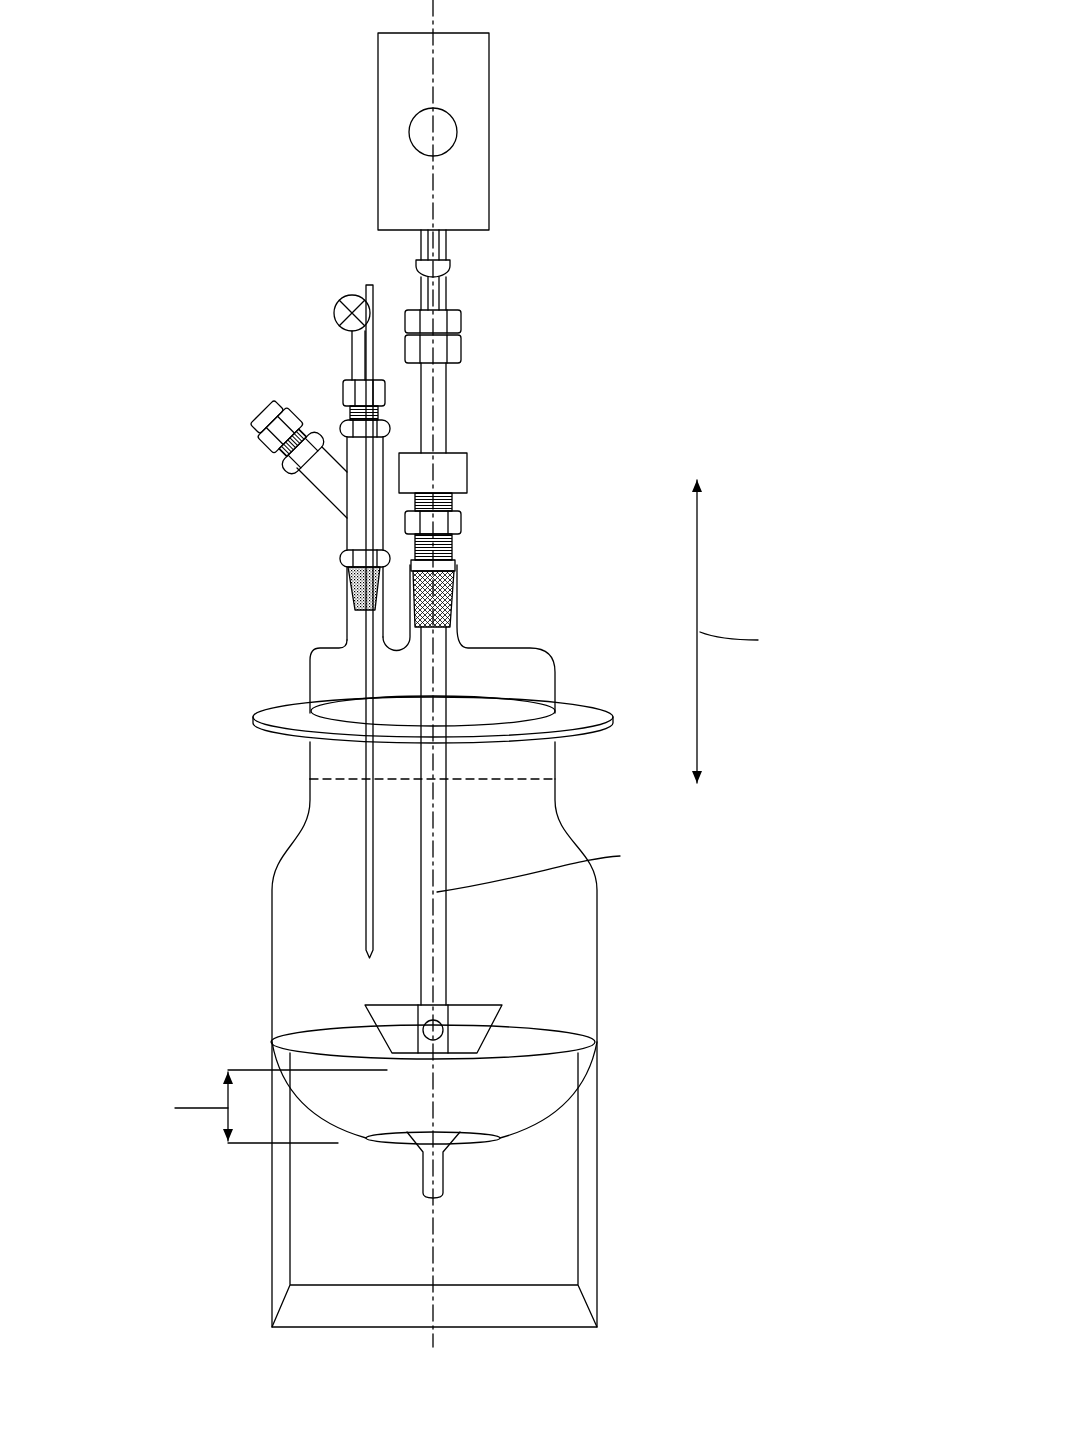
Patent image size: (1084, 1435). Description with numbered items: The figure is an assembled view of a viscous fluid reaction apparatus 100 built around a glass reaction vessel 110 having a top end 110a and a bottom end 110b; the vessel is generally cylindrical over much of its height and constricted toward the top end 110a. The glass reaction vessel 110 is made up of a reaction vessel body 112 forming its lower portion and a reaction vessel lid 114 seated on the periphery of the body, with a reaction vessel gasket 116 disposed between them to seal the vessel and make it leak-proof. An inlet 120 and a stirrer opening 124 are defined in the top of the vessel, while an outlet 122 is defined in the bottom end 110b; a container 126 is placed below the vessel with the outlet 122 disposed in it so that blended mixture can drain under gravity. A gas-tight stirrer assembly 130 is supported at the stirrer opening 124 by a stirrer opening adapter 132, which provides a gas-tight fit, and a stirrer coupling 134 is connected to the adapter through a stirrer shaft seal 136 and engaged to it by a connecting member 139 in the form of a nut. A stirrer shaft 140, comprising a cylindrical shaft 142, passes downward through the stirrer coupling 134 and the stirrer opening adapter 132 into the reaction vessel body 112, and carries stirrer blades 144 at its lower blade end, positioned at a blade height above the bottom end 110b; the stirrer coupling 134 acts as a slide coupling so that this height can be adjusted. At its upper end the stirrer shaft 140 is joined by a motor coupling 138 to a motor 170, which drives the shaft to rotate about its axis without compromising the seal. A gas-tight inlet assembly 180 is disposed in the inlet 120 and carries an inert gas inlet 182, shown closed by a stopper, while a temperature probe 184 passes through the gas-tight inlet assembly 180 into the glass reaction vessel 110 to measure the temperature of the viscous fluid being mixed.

The viscous fluid reaction apparatus 100 is at (632, 33).
The glass reaction vessel 110 is at (427, 946).
The top end 110a is at (522, 648).
The bottom end 110b is at (398, 1142).
The reaction vessel body 112 is at (270, 885).
The reaction vessel lid 114 is at (309, 676).
The reaction vessel gasket 116 is at (255, 722).
The inlet 120 is at (336, 561).
The outlet 122 is at (405, 1155).
The stirrer opening 124 is at (460, 565).
The container 126 is at (600, 1183).
The gas-tight stirrer assembly 130 is at (459, 404).
The stirrer opening adapter 132 is at (453, 597).
The stirrer coupling 134 is at (475, 471).
The stirrer shaft seal 136 is at (453, 502).
The motor coupling 138 is at (462, 320).
The connecting member 139 is at (462, 523).
The stirrer shaft 140 is at (459, 832).
The shaft 142 is at (422, 796).
The stirrer blades 144 is at (382, 1020).
The motor 170 is at (452, 130).
The gas-tight inlet assembly 180 is at (330, 391).
The inert gas inlet 182 is at (262, 448).
The temperature probe 184 is at (367, 955).